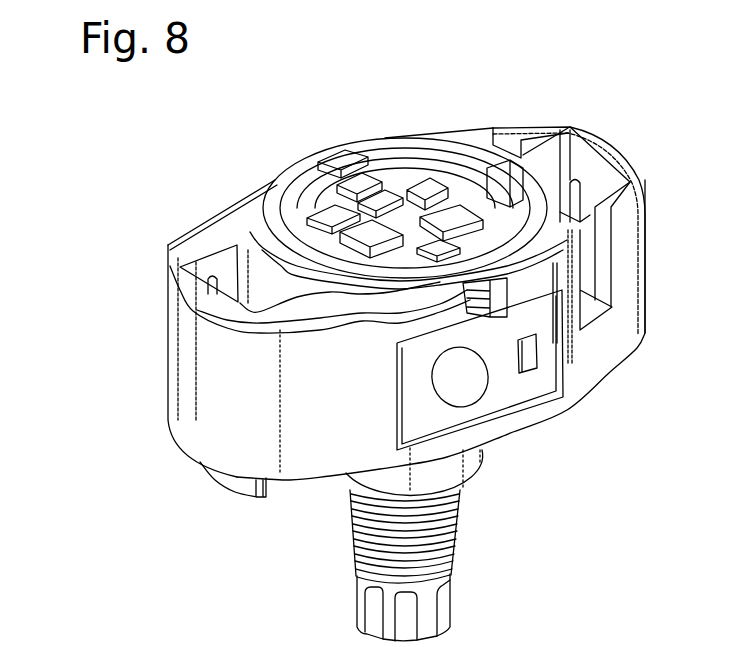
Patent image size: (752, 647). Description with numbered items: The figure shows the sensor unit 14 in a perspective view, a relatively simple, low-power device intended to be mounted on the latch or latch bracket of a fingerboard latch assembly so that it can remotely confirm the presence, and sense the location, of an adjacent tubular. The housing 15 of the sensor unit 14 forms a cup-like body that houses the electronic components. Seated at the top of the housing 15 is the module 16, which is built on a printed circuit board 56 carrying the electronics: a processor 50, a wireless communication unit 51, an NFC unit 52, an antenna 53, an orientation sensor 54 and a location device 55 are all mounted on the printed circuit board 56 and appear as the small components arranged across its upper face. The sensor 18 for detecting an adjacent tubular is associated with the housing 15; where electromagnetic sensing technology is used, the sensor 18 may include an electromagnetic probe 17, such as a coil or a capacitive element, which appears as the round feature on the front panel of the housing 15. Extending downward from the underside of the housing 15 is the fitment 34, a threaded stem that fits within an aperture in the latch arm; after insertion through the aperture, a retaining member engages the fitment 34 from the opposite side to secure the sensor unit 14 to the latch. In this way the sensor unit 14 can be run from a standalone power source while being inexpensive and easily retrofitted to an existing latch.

The sensor unit 14 is at (133, 421).
The housing 15 is at (605, 352).
The module 16 is at (323, 198).
The electromagnetic probe 17 is at (460, 392).
The sensor 18 is at (213, 215).
The fitment 34 is at (383, 537).
The processor 50 is at (348, 176).
The wireless communication unit 51 is at (460, 208).
The NFC unit 52 is at (377, 238).
The antenna 53 is at (433, 184).
The orientation sensor 54 is at (460, 249).
The location device 55 is at (318, 212).
The printed circuit board 56 is at (345, 200).